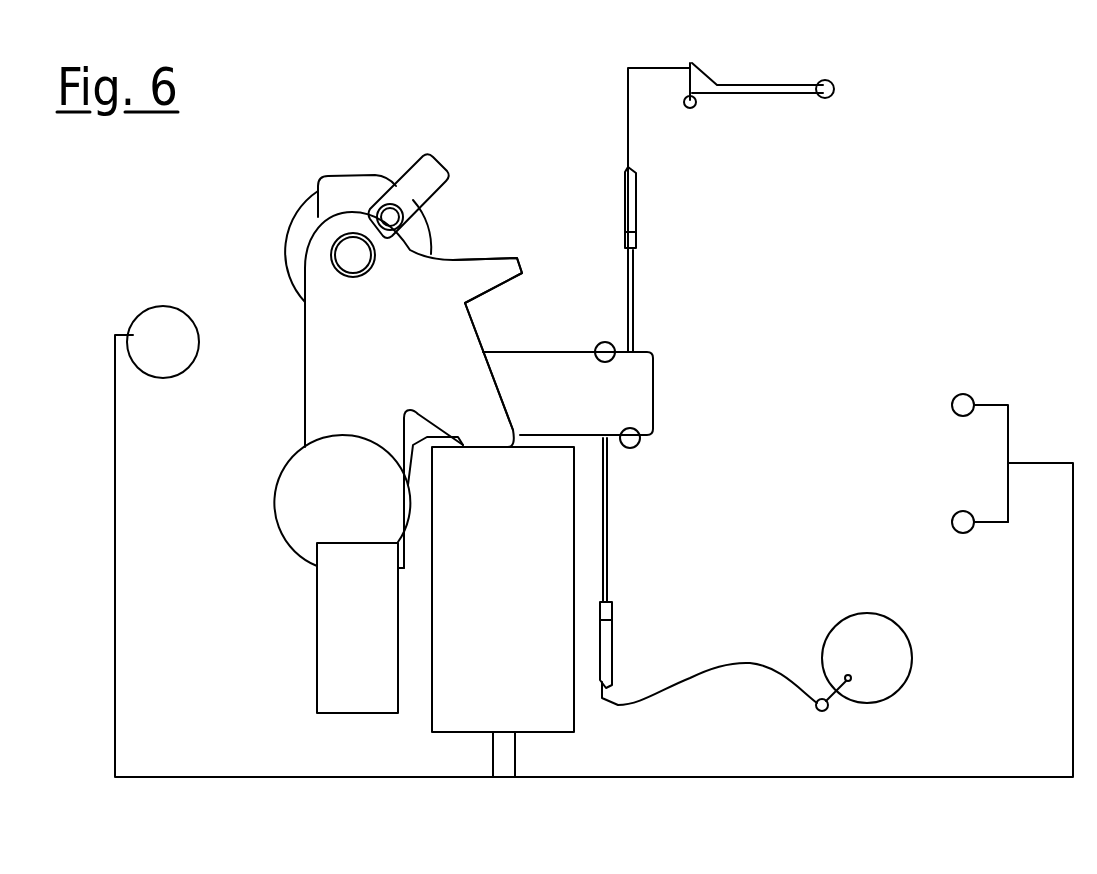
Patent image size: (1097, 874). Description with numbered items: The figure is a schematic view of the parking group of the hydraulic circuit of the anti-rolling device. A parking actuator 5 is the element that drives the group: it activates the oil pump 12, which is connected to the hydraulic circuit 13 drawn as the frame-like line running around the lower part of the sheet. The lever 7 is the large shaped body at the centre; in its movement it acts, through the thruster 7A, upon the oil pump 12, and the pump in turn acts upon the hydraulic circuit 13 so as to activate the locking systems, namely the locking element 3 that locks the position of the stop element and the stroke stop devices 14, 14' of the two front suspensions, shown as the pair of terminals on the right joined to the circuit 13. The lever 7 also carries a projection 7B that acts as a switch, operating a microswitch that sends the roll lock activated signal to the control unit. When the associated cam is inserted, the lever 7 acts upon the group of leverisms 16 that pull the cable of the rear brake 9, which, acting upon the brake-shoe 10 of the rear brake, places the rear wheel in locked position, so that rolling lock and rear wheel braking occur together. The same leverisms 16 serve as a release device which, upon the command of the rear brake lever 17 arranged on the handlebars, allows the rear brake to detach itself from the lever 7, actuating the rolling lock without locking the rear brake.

The locking element 3 is at (185, 353).
The parking actuator 5 is at (340, 673).
The lever 7 is at (327, 350).
The thruster 7A is at (488, 430).
The projection 7B is at (515, 262).
The cable of the rear brake 9 is at (633, 300).
The brake-shoe 10 is at (860, 620).
The oil pump 12 is at (550, 718).
The hydraulic circuit 13 is at (120, 549).
The stroke stop device 14 is at (950, 455).
The stroke stop device 14' is at (952, 530).
The group of leverisms 16 is at (637, 390).
The rear brake lever 17 is at (770, 90).